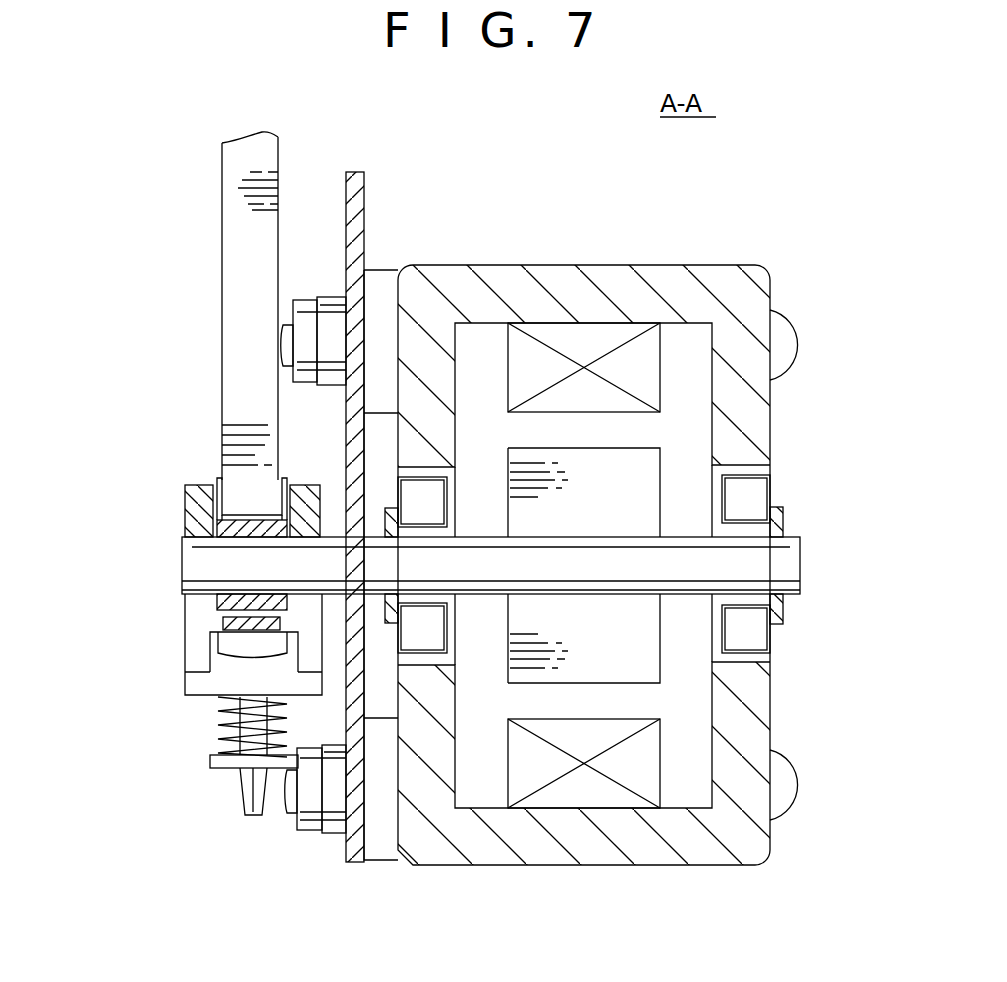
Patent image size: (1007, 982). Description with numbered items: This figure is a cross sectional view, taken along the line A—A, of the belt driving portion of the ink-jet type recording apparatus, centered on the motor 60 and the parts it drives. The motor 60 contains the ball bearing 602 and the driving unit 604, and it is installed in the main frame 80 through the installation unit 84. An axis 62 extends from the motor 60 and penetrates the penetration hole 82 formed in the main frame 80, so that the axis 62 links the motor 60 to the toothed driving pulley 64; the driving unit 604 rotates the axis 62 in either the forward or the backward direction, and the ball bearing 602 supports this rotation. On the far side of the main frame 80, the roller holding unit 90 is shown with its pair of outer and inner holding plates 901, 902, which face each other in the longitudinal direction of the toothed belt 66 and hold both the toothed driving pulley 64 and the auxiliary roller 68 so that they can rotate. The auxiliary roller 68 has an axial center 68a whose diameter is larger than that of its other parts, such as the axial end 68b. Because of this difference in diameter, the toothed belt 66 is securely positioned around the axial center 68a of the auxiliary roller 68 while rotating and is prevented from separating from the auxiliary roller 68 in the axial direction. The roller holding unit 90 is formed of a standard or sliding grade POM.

The motor 60 is at (725, 280).
The axis 62 is at (790, 558).
The toothed driving pulley 64 is at (185, 522).
The toothed belt 66 is at (235, 228).
The auxiliary roller 68 is at (178, 459).
The axial center 68a is at (223, 467).
The axial end 68b is at (215, 483).
The main frame 80 is at (357, 853).
The penetration hole 82 is at (353, 478).
The installation unit 84 is at (380, 287).
The roller holding unit 90 is at (239, 767).
The outer holding plate 901 is at (195, 678).
The inner holding plate 902 is at (308, 678).
The ball bearing 602 is at (755, 497).
The driving unit 604 is at (643, 353).